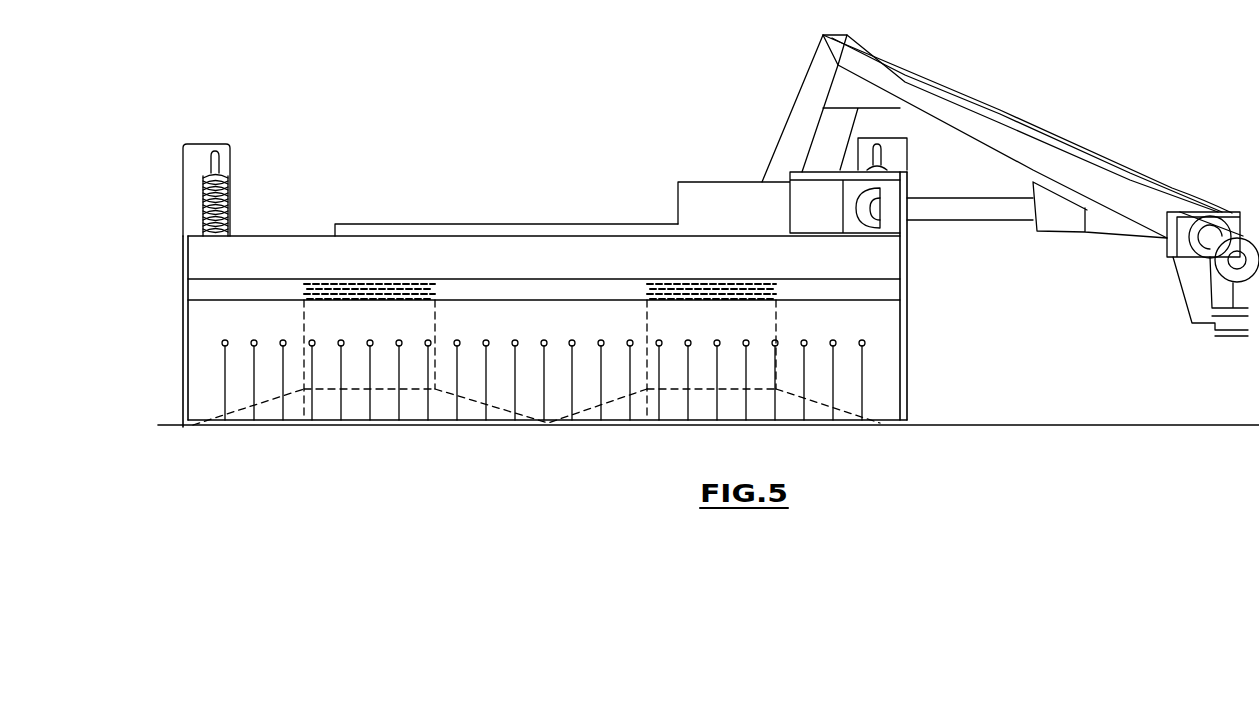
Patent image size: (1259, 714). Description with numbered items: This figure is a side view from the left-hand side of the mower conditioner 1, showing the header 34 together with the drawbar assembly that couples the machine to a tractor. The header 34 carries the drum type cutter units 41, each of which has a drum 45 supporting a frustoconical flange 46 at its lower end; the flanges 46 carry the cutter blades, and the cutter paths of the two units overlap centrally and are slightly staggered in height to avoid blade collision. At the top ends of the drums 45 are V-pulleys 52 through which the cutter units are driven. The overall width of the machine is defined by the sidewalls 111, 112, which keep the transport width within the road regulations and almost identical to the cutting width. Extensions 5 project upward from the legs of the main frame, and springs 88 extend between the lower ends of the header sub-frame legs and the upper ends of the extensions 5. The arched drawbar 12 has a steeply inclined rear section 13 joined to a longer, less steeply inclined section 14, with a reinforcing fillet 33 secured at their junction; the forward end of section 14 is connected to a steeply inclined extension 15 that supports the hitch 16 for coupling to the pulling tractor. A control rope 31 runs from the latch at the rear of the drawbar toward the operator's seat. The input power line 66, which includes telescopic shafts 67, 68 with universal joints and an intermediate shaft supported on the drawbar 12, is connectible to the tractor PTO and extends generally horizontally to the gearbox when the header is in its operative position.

The mower conditioner 1 is at (556, 184).
The extensions 5 is at (230, 157).
The arched drawbar 12 is at (952, 88).
The rear section 13 is at (797, 97).
The forwardly and downwardly inclined section 14 is at (1071, 146).
The extension 15 is at (1257, 290).
The hitch 16 is at (1232, 336).
The control rope 31 is at (1010, 116).
The reinforcing fillet 33 is at (890, 110).
The header 34 is at (948, 387).
The drum type cutter units 41 is at (305, 370).
The drums 45 is at (305, 333).
The frustoconical flanges 46 is at (250, 406).
The V-pulleys 52 is at (433, 281).
The input power line 66 is at (1023, 224).
The telescopic shaft 67 is at (1237, 234).
The telescopic shaft 68 is at (972, 223).
The springs 88 is at (228, 203).
The sidewall 111 is at (908, 285).
The sidewall 112 is at (184, 262).